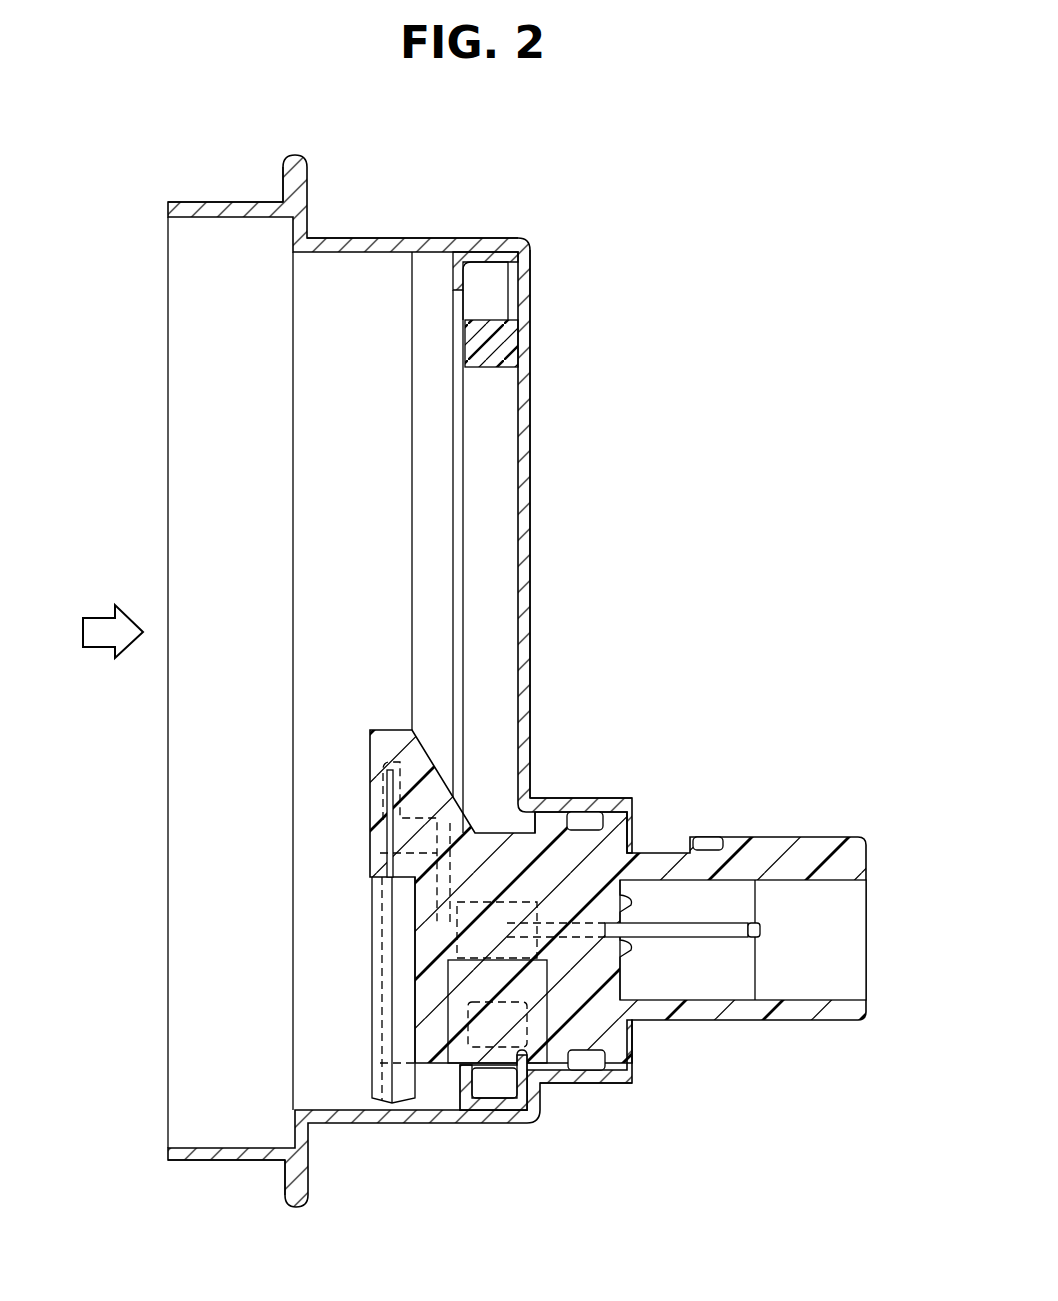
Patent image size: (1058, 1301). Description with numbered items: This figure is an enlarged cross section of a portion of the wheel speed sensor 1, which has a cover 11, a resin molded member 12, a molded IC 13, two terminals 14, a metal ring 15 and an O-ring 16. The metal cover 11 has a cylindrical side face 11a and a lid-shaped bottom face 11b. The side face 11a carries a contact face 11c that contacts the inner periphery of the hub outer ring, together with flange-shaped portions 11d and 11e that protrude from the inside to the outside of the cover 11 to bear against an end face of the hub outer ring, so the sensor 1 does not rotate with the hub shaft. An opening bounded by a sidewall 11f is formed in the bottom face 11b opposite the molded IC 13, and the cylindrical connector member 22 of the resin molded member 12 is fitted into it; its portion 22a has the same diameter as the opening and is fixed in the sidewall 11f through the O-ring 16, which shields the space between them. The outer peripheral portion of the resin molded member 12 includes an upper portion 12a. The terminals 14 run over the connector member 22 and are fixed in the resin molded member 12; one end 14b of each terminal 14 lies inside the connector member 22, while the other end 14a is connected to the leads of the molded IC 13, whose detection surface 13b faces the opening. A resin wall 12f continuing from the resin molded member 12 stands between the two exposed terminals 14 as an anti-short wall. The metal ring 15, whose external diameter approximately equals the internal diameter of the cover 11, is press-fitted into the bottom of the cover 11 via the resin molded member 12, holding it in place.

The wheel speed sensor 1 is at (435, 228).
The cover 11 is at (421, 669).
The side face 11a is at (367, 246).
The bottom face 11b is at (528, 515).
The contact face 11c is at (190, 203).
The flange-shaped portion 11d is at (283, 176).
The flange-shaped portion 11e is at (293, 228).
The sidewall 11f is at (618, 807).
The resin molded member 12 is at (350, 735).
The upper portion 12a is at (495, 352).
The resin wall 12f is at (498, 863).
The molded IC 13 is at (397, 997).
The detection surface 13b is at (373, 1100).
The terminal 14 is at (508, 894).
The end of terminal 14a is at (380, 790).
The end of terminal 14b is at (760, 935).
The metal ring 15 is at (482, 256).
The O-ring 16 is at (585, 818).
The connector member 22 is at (743, 860).
The portion of connector member 22a is at (635, 833).